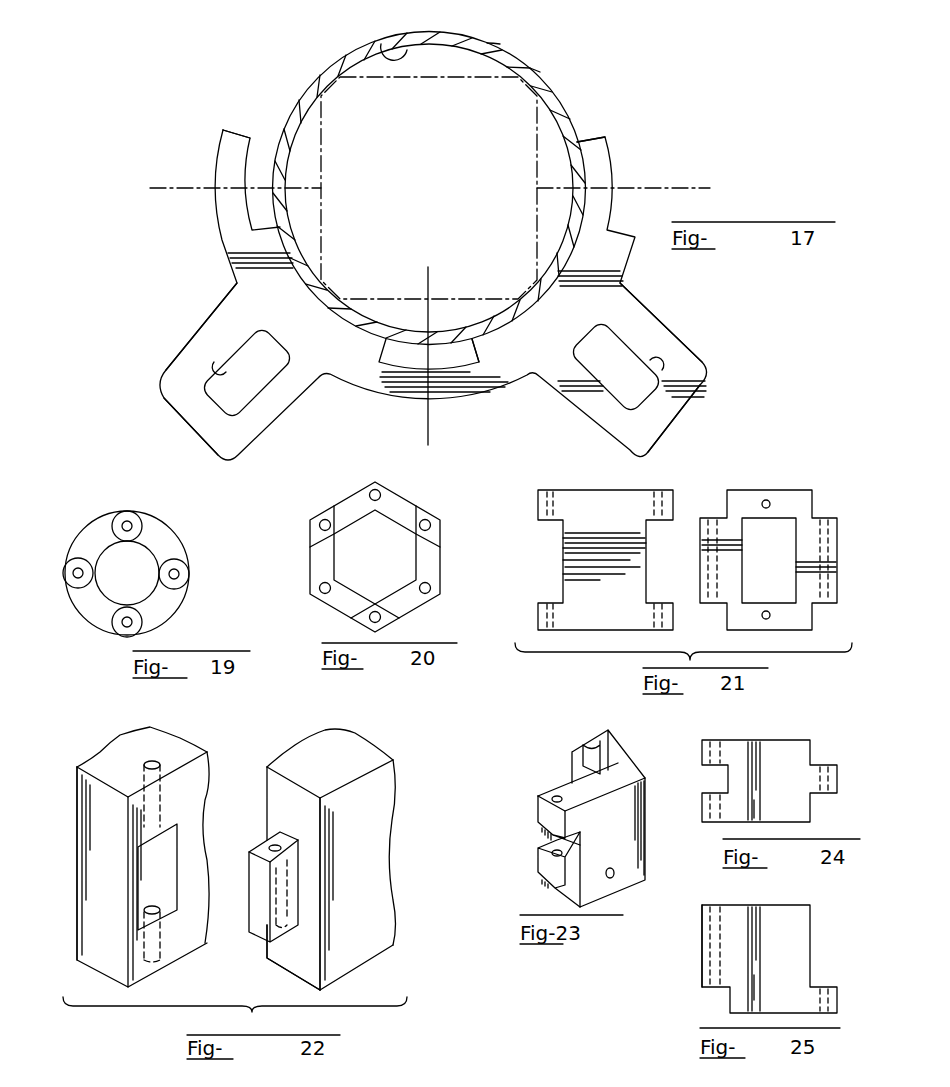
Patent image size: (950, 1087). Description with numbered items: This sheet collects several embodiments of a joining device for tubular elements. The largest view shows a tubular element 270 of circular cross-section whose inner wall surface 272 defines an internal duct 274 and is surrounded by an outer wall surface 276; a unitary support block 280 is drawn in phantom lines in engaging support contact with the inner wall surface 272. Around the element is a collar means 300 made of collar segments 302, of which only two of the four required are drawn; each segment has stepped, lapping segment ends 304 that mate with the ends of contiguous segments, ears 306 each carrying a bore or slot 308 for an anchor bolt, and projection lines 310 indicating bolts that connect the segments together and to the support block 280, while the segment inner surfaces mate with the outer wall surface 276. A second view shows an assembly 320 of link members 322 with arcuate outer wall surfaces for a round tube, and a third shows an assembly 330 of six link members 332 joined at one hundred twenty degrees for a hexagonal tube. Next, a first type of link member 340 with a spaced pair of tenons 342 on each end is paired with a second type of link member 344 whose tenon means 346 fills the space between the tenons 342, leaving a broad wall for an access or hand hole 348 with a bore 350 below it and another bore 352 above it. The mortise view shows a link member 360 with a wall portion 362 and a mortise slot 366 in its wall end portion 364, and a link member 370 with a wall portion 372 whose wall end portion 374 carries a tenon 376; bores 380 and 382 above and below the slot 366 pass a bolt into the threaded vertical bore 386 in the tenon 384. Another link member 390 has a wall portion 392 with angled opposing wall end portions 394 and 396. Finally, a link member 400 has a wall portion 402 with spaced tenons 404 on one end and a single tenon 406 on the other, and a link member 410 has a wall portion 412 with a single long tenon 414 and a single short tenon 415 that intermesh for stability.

In FIG. 17, the tubular element 270 is at (332, 72).
In FIG. 17, the inner wall surface 272 is at (383, 46).
In FIG. 17, the internal duct 274 is at (487, 43).
In FIG. 17, the outer wall surface 276 is at (530, 68).
In FIG. 17, the unitary support block 280 is at (537, 117).
In FIG. 17, the collar means 300 is at (210, 299).
In FIG. 17, the collar segments 302 is at (237, 282).
In FIG. 17, the segment ends 304 is at (218, 146).
In FIG. 17, the ears 306 is at (157, 392).
In FIG. 17, the bore or slot 308 is at (220, 367).
In FIG. 17, the projection lines 310 is at (195, 188).
In FIG. 19, the assembly 320 is at (143, 503).
In FIG. 19, the link members 322 is at (93, 516).
In FIG. 20, the assembly 330 is at (318, 502).
In FIG. 20, the link members 332 is at (407, 497).
In FIG. 21, the first type of link member 340 is at (617, 490).
In FIG. 21, the tenons 342 is at (538, 502).
In FIG. 21, the second type of link member 344 is at (748, 490).
In FIG. 21, the tenon means 346 is at (700, 568).
In FIG. 21, the access or hand hole 348 is at (783, 522).
In FIG. 21, the bore 350 is at (768, 619).
In FIG. 21, the bore 352 is at (766, 500).
In FIG. 22, the link member 360 is at (193, 732).
In FIG. 22, the wall portion 362 is at (135, 725).
In FIG. 22, the wall end portion 364 is at (102, 752).
In FIG. 22, the mortise slot 366 is at (180, 837).
In FIG. 22, the link member 370 is at (377, 737).
In FIG. 22, the wall portion 372 is at (318, 730).
In FIG. 22, the wall end portion 374 is at (270, 840).
In FIG. 22, the tenon 376 is at (253, 960).
In FIG. 22, the bore 380 is at (147, 762).
In FIG. 22, the bore 382 is at (150, 905).
In FIG. 22, the tenon 384 is at (303, 893).
In FIG. 22, the vertical bore 386 is at (275, 846).
In FIG. 23, the link member 390 is at (530, 822).
In FIG. 23, the wall portion 392 is at (625, 793).
In FIG. 23, the wall end portion 394 is at (598, 730).
In FIG. 23, the wall end portion 396 is at (550, 793).
In FIG. 24, the link member 400 is at (818, 742).
In FIG. 24, the wall portion 402 is at (749, 742).
In FIG. 24, the spaced tenons 404 is at (702, 752).
In FIG. 24, the single tenon 406 is at (838, 780).
In FIG. 25, the connector plate 410 is at (817, 933).
In FIG. 25, the wall portion 412 is at (750, 904).
In FIG. 25, the single long tenon 414 is at (702, 943).
In FIG. 25, the single short tenon 415 is at (832, 987).